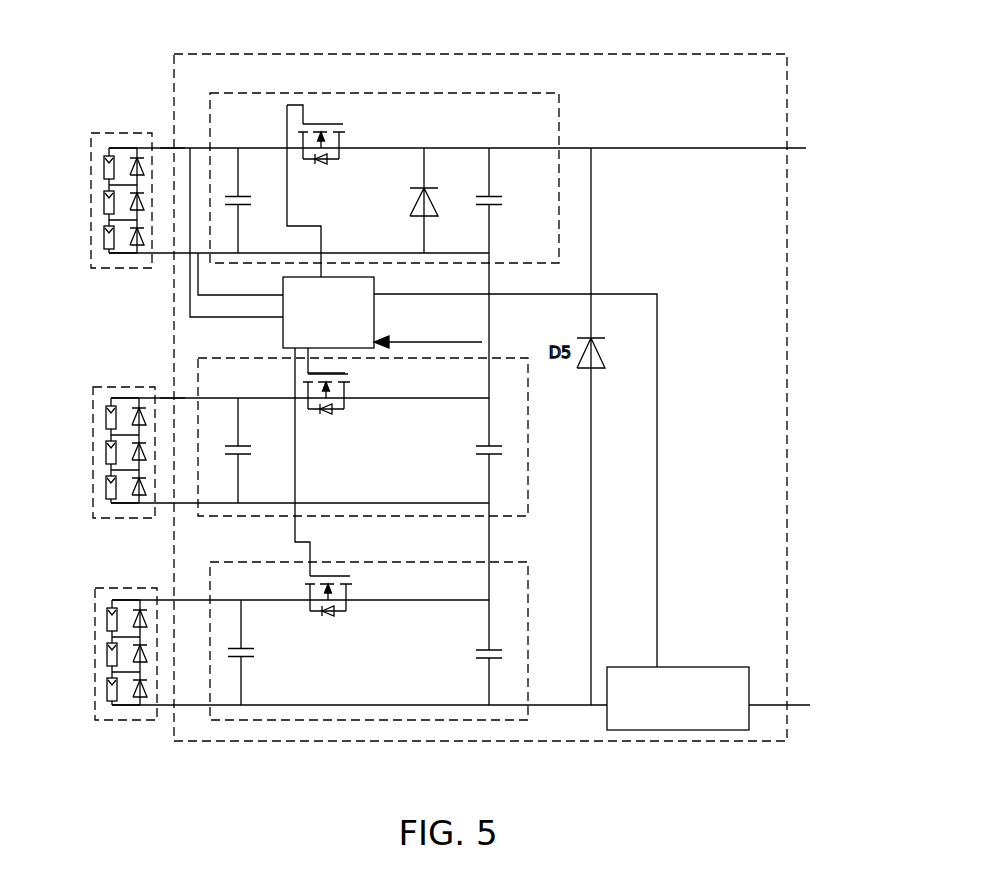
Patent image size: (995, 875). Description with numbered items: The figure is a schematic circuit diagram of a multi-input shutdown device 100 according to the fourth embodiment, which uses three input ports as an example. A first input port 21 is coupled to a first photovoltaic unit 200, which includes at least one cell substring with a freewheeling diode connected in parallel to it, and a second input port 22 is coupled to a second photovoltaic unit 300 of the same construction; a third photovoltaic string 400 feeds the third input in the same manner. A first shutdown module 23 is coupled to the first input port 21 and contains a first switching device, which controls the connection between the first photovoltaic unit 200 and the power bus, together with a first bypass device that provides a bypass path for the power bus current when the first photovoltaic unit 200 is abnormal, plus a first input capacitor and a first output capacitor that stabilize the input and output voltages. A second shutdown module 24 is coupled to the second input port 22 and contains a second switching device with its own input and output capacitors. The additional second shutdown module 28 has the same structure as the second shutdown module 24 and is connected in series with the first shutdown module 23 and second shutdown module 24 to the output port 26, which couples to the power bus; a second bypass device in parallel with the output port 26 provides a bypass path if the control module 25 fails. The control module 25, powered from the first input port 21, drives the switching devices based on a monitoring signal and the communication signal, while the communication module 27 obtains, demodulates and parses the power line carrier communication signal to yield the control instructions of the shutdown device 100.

The multi-input shutdown device 100 is at (660, 54).
The first input port 21 is at (173, 147).
The second input port 22 is at (173, 398).
The first shutdown module 23 is at (392, 93).
The second shutdown module 24 is at (405, 516).
The control module 25 is at (423, 407).
The output port 26 is at (783, 148).
The communication module 27 is at (678, 698).
The second shutdown module 28 is at (415, 718).
The first photovoltaic unit 200 is at (93, 134).
The second photovoltaic unit 300 is at (93, 387).
The third photovoltaic string 400 is at (98, 616).